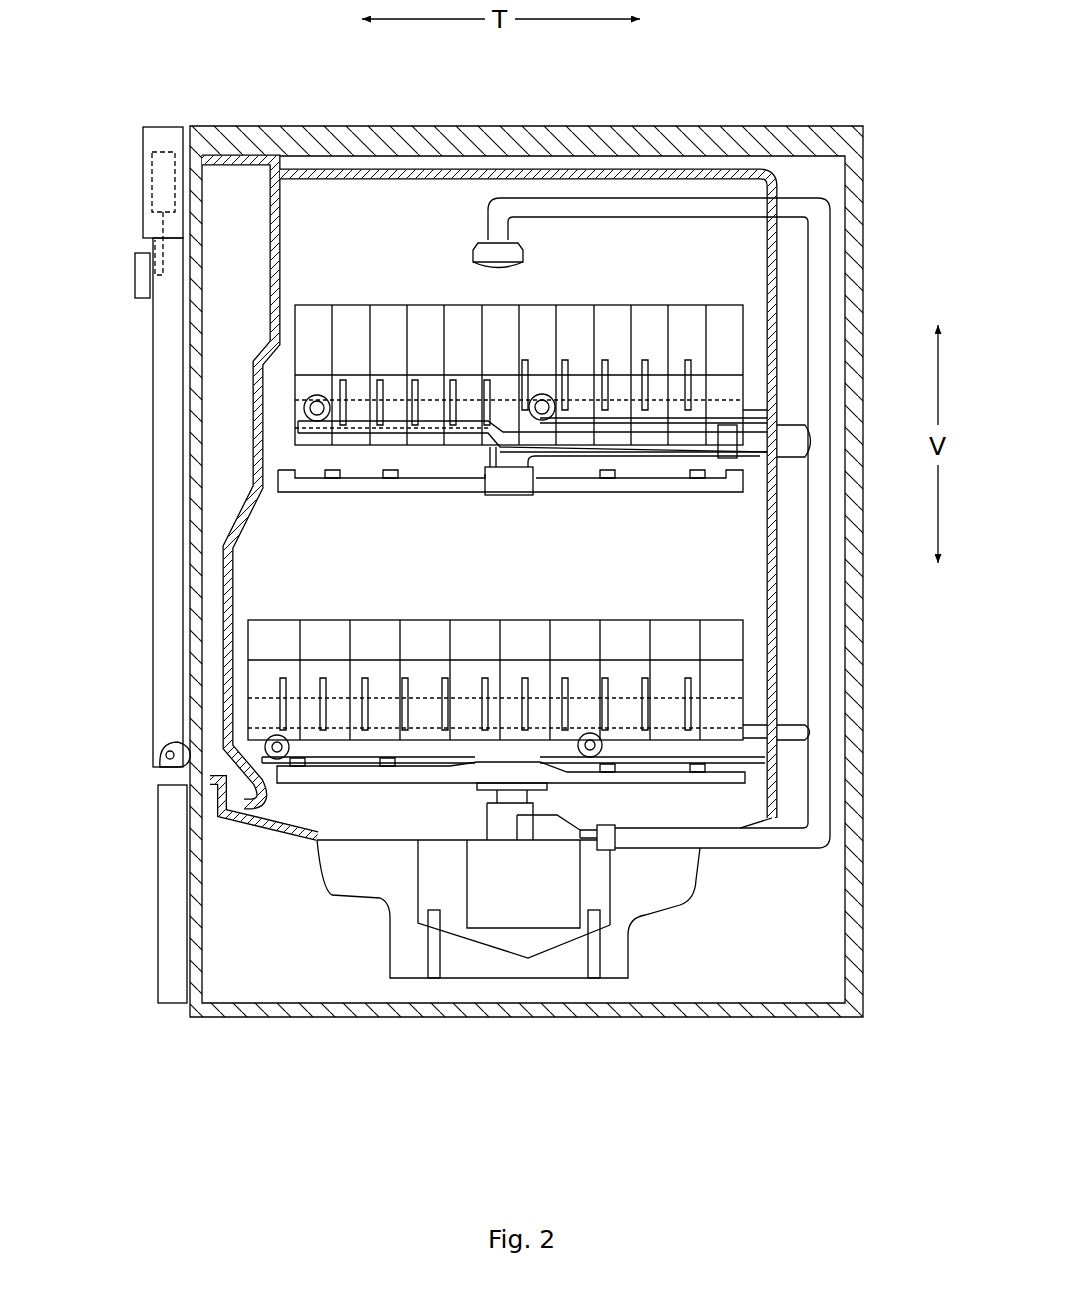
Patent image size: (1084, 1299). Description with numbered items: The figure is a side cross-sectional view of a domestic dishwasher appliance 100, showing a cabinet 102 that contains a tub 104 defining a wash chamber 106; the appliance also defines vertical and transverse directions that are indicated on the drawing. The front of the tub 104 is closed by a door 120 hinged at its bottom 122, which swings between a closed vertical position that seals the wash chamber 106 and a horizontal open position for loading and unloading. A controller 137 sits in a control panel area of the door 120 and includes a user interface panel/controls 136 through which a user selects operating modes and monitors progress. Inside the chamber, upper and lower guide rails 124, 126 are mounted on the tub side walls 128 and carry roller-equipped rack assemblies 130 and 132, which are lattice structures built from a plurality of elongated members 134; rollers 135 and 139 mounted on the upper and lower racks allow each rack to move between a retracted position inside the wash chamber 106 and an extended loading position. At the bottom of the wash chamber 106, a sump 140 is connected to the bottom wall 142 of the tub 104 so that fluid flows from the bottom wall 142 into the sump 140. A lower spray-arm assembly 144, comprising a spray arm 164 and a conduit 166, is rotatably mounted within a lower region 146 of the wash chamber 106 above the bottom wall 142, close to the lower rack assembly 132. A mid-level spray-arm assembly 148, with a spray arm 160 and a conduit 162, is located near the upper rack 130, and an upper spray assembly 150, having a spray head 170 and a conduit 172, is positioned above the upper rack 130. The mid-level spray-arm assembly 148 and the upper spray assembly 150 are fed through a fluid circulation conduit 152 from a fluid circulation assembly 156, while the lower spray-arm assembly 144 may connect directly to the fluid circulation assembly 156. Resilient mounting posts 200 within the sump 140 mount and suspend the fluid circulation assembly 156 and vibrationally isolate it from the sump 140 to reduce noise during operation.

The dishwasher appliance 100 is at (712, 82).
The cabinet 102 is at (850, 188).
The tub 104 is at (774, 186).
The wash chamber 106 is at (268, 555).
The door 120 is at (120, 445).
The bottom 122 is at (160, 770).
The upper guide rail 124 is at (300, 407).
The lower guide rail 126 is at (243, 783).
The tub side walls 128 is at (375, 205).
The upper rack assembly 130 is at (352, 287).
The lower rack assembly 132 is at (597, 620).
The elongated members 134 is at (428, 620).
The rollers 135 is at (305, 428).
The user interface panel/controls 136 is at (140, 275).
The controller 137 is at (140, 145).
The rollers 139 is at (590, 733).
The sump 140 is at (700, 870).
The bottom wall 142 is at (210, 828).
The lower spray-arm assembly 144 is at (302, 782).
The lower region 146 is at (748, 745).
The mid-level spray-arm assembly 148 is at (548, 490).
The upper spray assembly 150 is at (522, 262).
The fluid circulation conduit 152 is at (832, 545).
The fluid circulation assembly 156 is at (612, 893).
The spray arm 160 is at (410, 480).
The conduit 162 is at (680, 443).
The spray arm 164 is at (413, 776).
The conduit 166 is at (510, 795).
The spray head 170 is at (475, 258).
The conduit 172 is at (635, 215).
The resilient mounting posts 200 is at (430, 968).